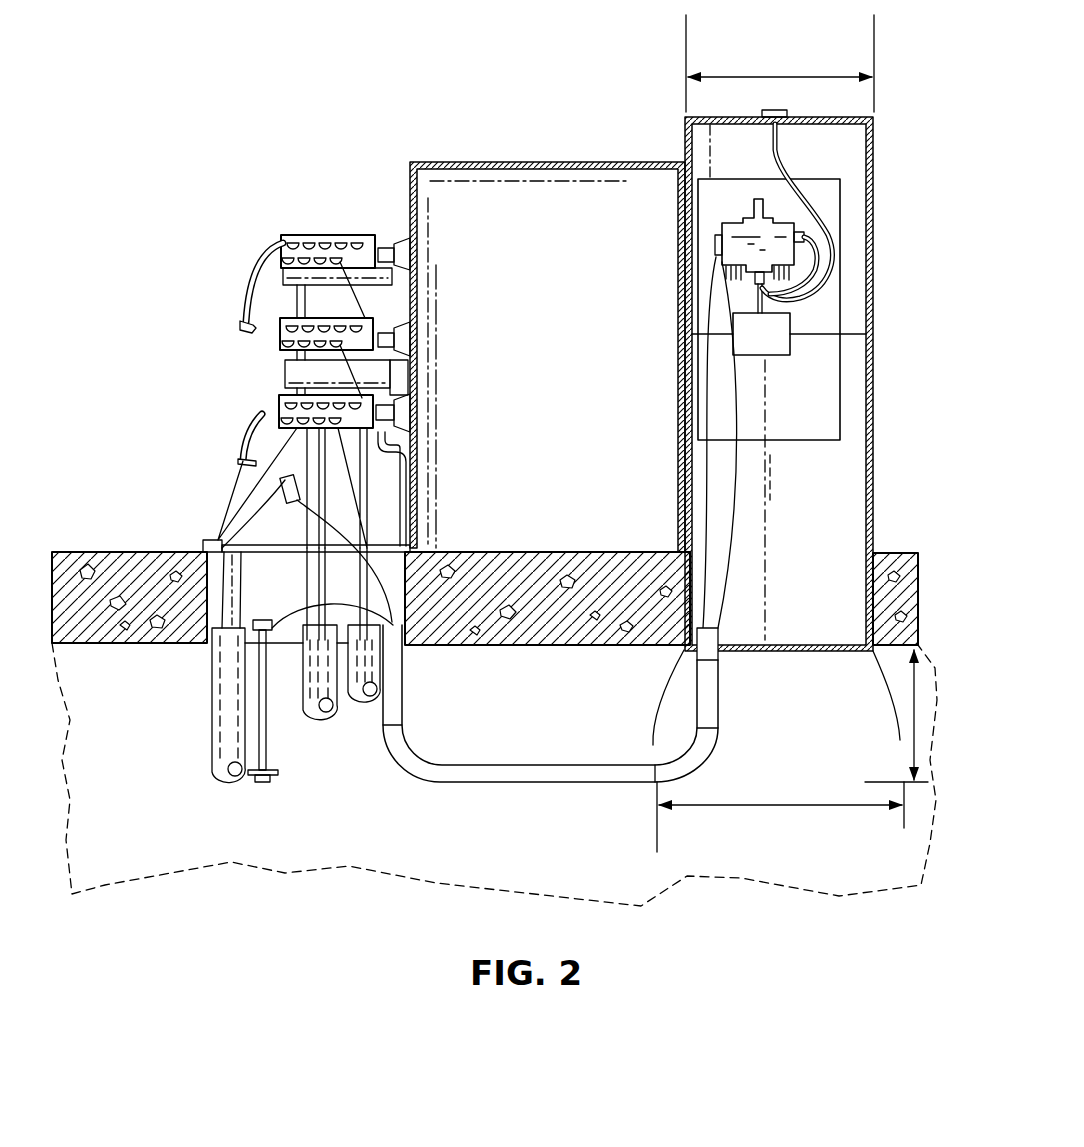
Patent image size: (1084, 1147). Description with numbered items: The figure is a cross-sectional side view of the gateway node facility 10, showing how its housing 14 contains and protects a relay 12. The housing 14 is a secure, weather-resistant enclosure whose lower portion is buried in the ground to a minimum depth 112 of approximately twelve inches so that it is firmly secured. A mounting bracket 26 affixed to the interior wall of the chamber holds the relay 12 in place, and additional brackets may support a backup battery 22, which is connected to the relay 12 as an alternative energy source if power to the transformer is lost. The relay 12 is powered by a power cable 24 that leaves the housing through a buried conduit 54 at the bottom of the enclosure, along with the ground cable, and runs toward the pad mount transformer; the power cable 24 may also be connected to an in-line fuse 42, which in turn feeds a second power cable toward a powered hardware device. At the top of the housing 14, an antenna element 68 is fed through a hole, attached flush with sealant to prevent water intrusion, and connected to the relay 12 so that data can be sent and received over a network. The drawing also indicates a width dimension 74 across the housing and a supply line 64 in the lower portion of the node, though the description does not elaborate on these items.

The gateway node facility 10 is at (890, 80).
The relay 12 is at (780, 214).
The housing 14 is at (682, 158).
The backup battery 22 is at (761, 333).
The power cable 24 is at (763, 436).
The mounting bracket 26 is at (813, 303).
The in-line fuse 42 is at (272, 482).
The conduit 54 is at (645, 786).
The supply pipe 64 is at (374, 486).
The antenna element 68 is at (780, 105).
The cabinet width 74 is at (786, 77).
The minimum depth 112 is at (912, 752).